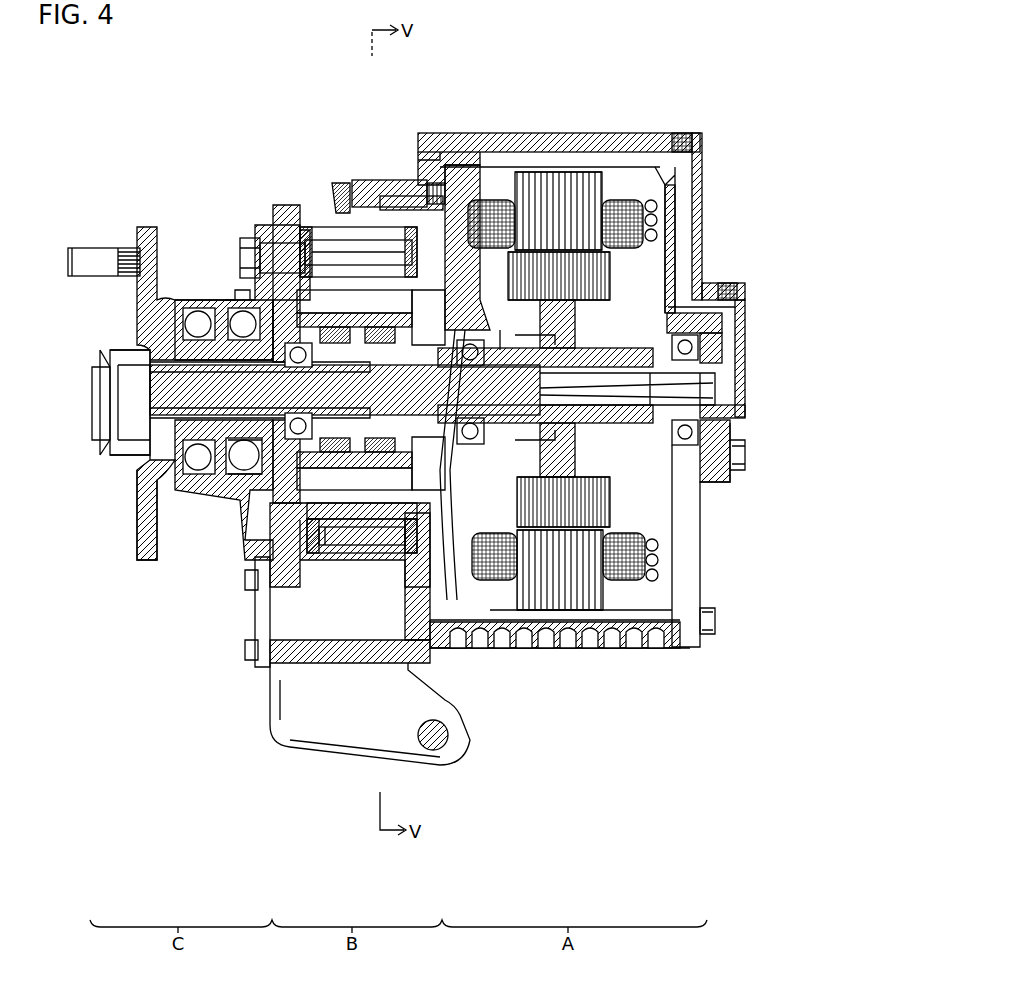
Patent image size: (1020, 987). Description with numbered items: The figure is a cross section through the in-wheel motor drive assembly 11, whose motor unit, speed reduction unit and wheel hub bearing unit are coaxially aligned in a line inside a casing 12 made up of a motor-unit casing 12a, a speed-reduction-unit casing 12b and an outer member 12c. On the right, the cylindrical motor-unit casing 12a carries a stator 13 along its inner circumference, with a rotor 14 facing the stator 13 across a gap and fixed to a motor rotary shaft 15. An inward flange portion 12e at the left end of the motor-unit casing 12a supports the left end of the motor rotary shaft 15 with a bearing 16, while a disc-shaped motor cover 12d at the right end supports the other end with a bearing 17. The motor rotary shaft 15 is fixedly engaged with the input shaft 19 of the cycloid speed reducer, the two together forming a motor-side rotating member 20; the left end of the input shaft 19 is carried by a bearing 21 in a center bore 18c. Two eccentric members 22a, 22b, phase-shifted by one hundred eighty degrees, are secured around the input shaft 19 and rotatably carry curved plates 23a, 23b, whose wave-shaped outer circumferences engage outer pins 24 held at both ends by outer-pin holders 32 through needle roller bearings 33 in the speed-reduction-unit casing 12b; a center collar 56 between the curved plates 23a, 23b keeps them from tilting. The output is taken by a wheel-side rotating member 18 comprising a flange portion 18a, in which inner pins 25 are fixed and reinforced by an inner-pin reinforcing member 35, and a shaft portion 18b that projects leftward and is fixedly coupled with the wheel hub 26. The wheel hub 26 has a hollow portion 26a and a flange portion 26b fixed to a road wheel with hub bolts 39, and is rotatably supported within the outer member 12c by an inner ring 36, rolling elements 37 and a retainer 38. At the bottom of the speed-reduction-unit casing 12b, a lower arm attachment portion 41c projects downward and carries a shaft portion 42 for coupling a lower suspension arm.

The in-wheel motor drive assembly 11 is at (685, 84).
The casing 12 is at (185, 97).
The motor-unit casing 12a is at (445, 141).
The speed-reduction-unit casing 12b is at (290, 225).
The outer member 12c is at (192, 300).
The motor cover 12d is at (700, 212).
The flange portion 12e is at (412, 198).
The stator 13 is at (652, 240).
The rotor 14 is at (618, 280).
The motor rotary shaft 15 is at (690, 352).
The bearing 16 is at (499, 460).
The bearing 17 is at (692, 433).
The wheel-side rotating member 18 is at (272, 172).
The flange portion 18a is at (253, 238).
The shaft portion 18b is at (214, 300).
The center bore 18c is at (115, 436).
The input shaft 19 is at (705, 392).
The motor-side rotating member 20 is at (792, 370).
The bearing 21 is at (236, 392).
The eccentric member 22a is at (448, 600).
The eccentric member 22b is at (152, 413).
The curved plate 23a is at (382, 218).
The curved plate 23b is at (358, 530).
The outer pins 24 is at (330, 252).
The inner pins 25 is at (378, 482).
The wheel hub 26 is at (117, 298).
The hollow portion 26a is at (107, 377).
The flange portion 26b is at (146, 521).
The outer-pin holders 32 is at (313, 545).
The needle roller bearings 33 is at (332, 560).
The inner-pin reinforcing member 35 is at (491, 205).
The inner ring 36 is at (240, 478).
The rolling elements 37 is at (222, 478).
The retainer 38 is at (194, 478).
The hub bolts 39 is at (85, 258).
The lower arm attachment portion 41c is at (394, 763).
The shaft portion 42 is at (432, 750).
The center collar 56 is at (340, 200).